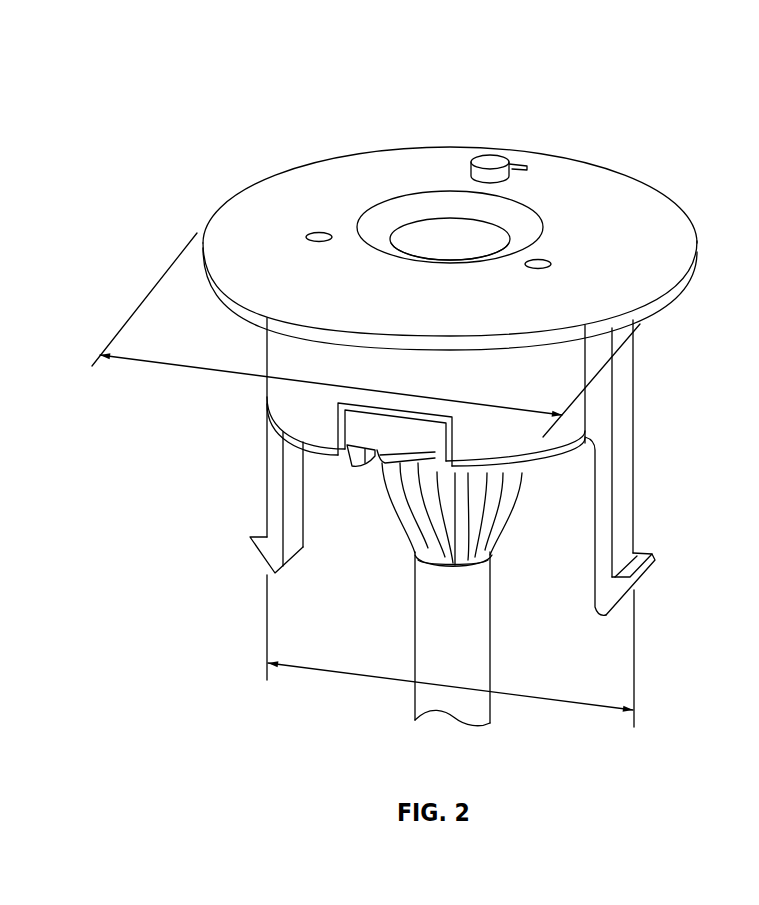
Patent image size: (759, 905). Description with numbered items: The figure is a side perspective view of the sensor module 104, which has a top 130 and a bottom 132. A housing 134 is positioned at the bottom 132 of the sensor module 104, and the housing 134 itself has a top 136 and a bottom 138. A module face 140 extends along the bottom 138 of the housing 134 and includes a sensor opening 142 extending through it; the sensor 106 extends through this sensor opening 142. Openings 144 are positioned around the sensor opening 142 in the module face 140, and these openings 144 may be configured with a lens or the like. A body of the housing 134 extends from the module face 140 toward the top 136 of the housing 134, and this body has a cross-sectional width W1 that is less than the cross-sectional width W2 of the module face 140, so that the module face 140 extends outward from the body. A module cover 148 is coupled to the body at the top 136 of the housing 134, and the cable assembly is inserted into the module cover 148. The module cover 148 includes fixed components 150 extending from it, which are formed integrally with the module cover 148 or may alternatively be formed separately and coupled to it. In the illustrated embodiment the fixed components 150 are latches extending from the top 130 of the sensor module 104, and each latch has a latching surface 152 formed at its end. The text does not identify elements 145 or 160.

The sensor module 104 is at (598, 70).
The sensor 106 is at (470, 245).
The top 130 is at (292, 700).
The bottom 132 is at (284, 121).
The housing 134 is at (243, 336).
The top 136 is at (262, 421).
The bottom 138 is at (661, 162).
The module face 140 is at (381, 171).
The sensor opening 142 is at (441, 202).
The openings 144 is at (317, 232).
The cavity 145 is at (505, 389).
The module cover 148 is at (348, 456).
The fixed components 150 is at (270, 498).
The latching surface 152 is at (265, 524).
The cable 160 is at (568, 552).
The cross-sectional width W1 is at (537, 702).
The cross-sectional width W2 is at (217, 373).